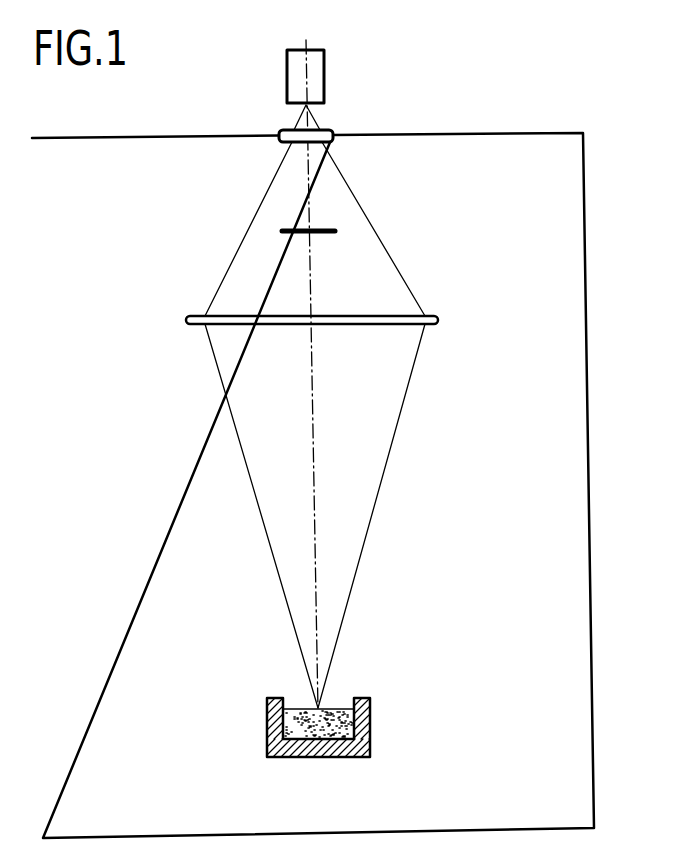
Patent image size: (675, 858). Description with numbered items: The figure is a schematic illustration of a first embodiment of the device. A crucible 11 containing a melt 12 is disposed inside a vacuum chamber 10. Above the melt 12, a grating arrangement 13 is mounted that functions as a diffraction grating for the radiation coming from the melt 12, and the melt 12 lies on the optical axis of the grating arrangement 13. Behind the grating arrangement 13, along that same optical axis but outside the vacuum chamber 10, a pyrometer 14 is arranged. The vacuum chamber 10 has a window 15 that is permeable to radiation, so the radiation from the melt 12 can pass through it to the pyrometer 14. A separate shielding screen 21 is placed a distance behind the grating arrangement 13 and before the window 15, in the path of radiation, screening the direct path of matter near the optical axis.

The vacuum chamber 10 is at (587, 415).
The crucible 11 is at (372, 728).
The melt 12 is at (330, 710).
The grating arrangement 13 is at (375, 325).
The pyrometer 14 is at (318, 62).
The window 15 is at (334, 134).
The shielding screen 21 is at (290, 227).